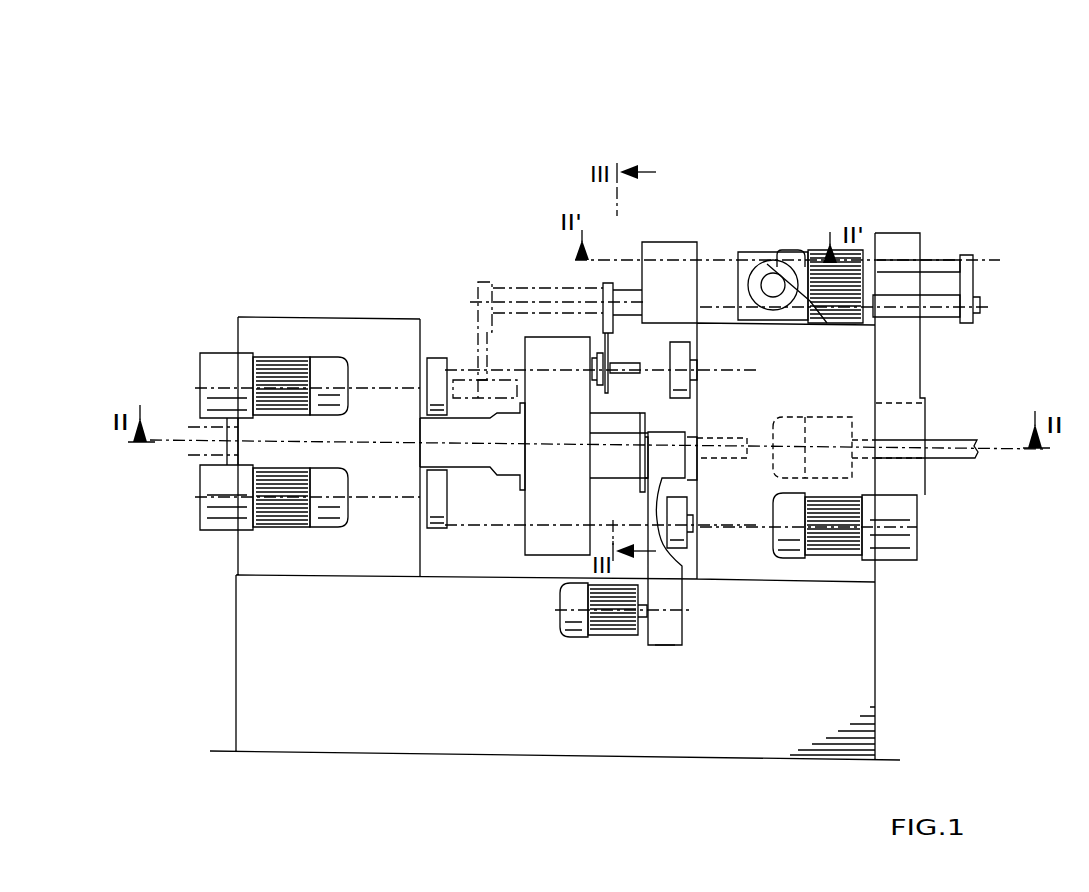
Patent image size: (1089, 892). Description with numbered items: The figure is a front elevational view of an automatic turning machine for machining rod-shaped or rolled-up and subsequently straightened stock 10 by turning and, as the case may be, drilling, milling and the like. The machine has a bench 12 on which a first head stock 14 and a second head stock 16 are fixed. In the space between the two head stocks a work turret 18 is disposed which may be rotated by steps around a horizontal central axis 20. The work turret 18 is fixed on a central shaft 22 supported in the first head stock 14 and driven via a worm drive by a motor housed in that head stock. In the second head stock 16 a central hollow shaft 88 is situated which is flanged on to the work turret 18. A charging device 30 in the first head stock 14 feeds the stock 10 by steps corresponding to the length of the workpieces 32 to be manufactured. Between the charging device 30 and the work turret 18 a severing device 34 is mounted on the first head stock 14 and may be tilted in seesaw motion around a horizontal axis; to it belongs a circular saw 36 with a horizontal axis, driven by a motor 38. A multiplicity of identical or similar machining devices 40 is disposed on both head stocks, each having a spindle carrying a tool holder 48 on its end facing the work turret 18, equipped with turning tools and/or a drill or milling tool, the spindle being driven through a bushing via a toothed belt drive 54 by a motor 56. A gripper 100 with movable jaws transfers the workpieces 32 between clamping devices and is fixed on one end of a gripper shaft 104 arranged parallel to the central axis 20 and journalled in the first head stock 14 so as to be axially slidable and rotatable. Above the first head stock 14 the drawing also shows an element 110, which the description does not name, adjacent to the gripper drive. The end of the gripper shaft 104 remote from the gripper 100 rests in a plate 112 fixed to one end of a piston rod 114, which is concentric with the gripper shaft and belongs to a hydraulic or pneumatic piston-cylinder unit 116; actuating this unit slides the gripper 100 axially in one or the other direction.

The stock 10 is at (964, 454).
The bench 12 is at (860, 689).
The first head stock 14 is at (766, 568).
The second head stock 16 is at (327, 577).
The work turret 18 is at (538, 538).
The central axis 20 is at (386, 443).
The central shaft 22 is at (690, 418).
The charging device 30 is at (873, 431).
The workpiece 32 is at (633, 369).
The severing device 34 is at (677, 624).
The circular saw 36 is at (637, 483).
The motor 38 is at (611, 629).
The machining device 40 is at (554, 448).
The tool holder 48 is at (427, 371).
The toothed belt drive 54 is at (205, 368).
The motor 56 is at (288, 370).
The central hollow shaft 88 is at (467, 457).
The gripper 100 is at (601, 291).
The gripper shaft 104 is at (946, 306).
The drive motor 110 is at (763, 274).
The plate 112 is at (973, 281).
The piston rod 114 is at (945, 262).
The piston-cylinder unit 116 is at (674, 268).